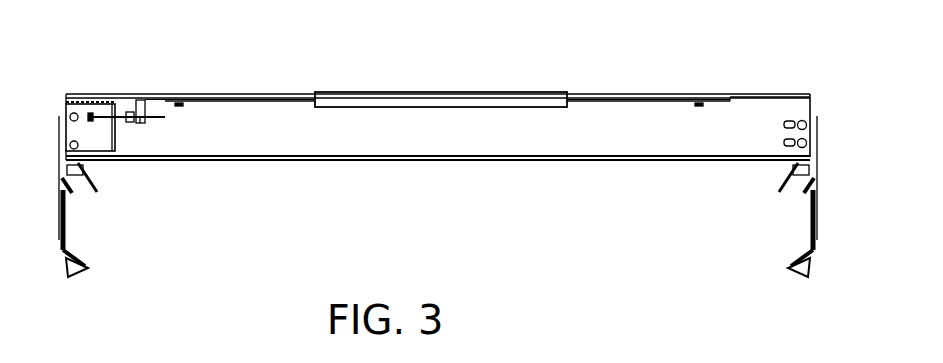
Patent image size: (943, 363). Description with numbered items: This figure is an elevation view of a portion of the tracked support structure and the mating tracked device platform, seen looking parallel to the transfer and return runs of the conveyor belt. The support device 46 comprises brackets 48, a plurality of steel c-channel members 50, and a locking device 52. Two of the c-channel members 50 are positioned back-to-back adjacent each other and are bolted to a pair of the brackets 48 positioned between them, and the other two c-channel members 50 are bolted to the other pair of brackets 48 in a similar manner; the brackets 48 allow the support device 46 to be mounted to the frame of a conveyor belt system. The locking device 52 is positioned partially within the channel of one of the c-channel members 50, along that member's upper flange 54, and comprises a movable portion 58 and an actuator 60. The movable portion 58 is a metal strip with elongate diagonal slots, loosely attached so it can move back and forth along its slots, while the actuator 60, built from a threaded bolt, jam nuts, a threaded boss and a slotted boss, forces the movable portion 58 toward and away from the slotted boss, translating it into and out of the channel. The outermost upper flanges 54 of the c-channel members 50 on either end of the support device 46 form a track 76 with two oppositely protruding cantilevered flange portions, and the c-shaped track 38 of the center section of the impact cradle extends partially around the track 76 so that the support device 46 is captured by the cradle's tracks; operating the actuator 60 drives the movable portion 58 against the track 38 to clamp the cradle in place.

The track 38 is at (449, 104).
The support device 46 is at (658, 150).
The brackets 48 is at (78, 183).
The c-channel members 50 is at (762, 130).
The locking device 52 is at (142, 100).
The upper flange 54 is at (793, 94).
The movable portion 58 is at (288, 97).
The actuator 60 is at (96, 106).
The track 76 is at (640, 97).